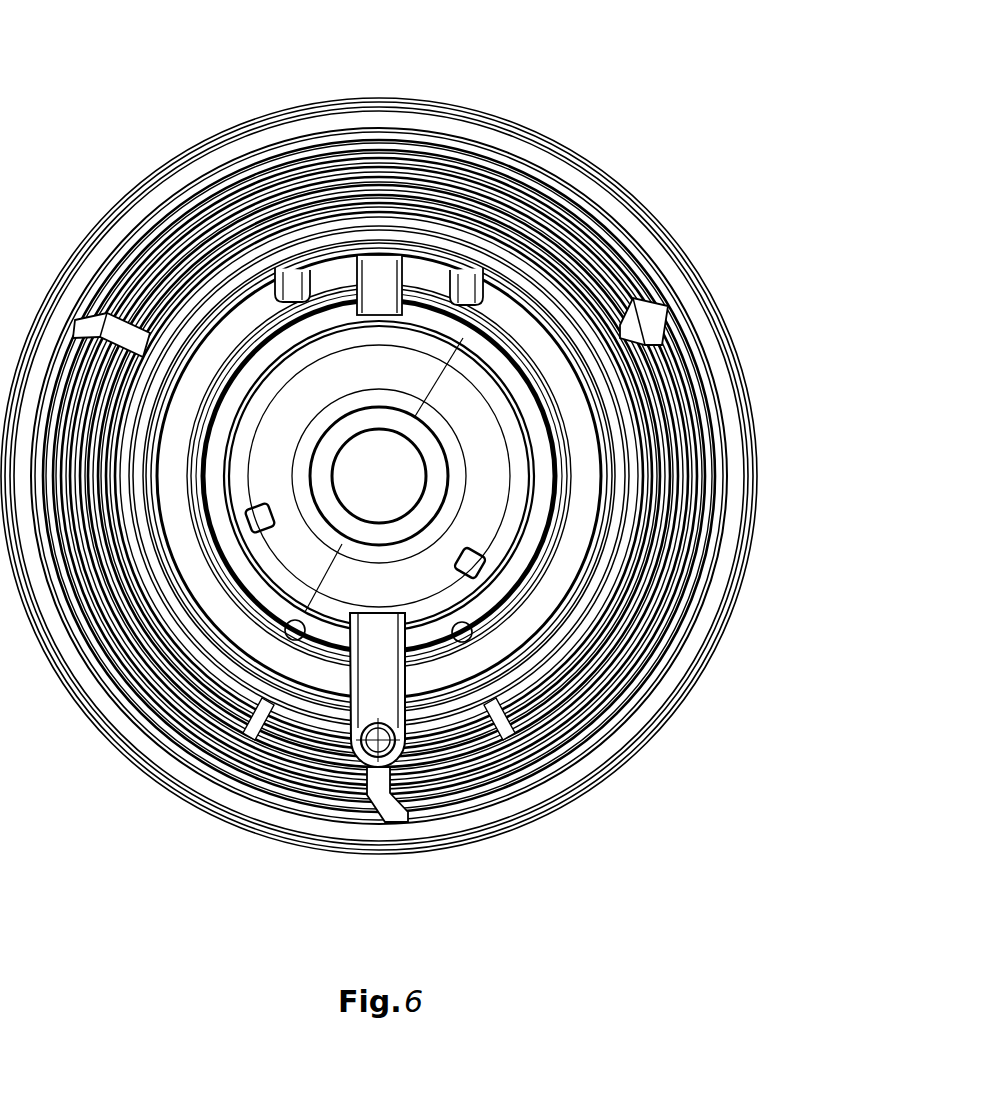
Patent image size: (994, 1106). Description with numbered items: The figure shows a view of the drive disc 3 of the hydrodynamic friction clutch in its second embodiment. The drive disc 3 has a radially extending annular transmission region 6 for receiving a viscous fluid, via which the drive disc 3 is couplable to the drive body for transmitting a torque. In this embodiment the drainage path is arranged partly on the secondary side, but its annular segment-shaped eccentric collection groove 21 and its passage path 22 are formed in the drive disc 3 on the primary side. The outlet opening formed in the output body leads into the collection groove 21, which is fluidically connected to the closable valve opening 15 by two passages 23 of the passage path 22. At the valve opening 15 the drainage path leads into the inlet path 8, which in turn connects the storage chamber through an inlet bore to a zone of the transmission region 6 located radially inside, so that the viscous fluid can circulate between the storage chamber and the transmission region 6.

The drive disc 3 is at (379, 431).
The transmission region 6 is at (689, 416).
The collection groove 21 is at (550, 537).
The passage path 22 is at (370, 694).
The passages 23 is at (295, 638).
The valve opening 15 is at (327, 777).
The inlet path 8 is at (372, 788).